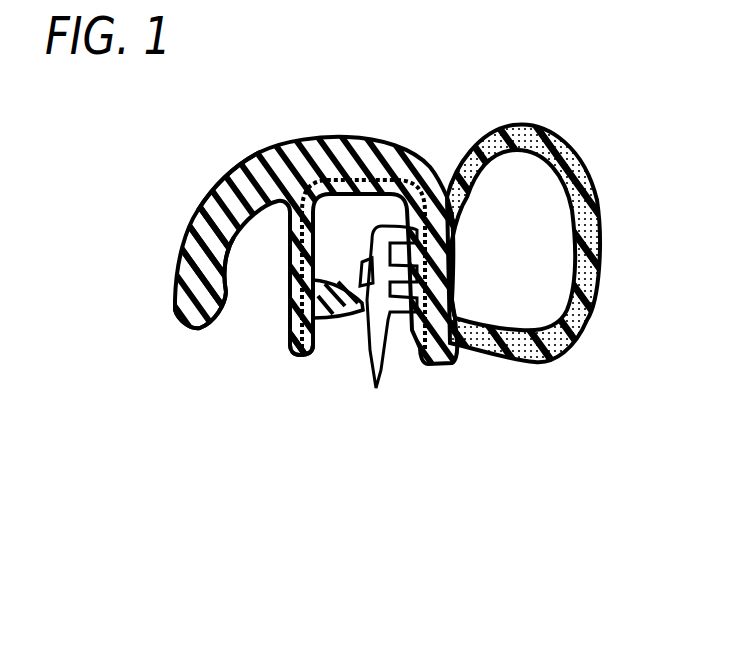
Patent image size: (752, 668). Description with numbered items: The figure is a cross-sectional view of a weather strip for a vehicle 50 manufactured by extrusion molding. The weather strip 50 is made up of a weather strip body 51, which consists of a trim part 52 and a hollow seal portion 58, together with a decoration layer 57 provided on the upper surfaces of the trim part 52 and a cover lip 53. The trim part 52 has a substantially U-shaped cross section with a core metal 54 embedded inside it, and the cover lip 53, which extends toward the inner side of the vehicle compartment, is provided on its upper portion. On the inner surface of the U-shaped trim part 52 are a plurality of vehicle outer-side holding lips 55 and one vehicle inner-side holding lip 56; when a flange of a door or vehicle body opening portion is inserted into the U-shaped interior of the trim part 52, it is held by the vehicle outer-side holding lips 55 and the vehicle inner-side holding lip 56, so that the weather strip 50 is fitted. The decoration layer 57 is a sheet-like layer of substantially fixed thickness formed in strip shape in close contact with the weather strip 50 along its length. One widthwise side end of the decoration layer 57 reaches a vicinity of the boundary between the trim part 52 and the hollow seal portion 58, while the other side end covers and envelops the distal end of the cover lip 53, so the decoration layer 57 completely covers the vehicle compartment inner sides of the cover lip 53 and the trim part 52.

The weather strip for a vehicle 50 is at (376, 334).
The weather strip body 51 is at (319, 140).
The trim part 52 is at (287, 247).
The cover lip 53 is at (207, 247).
The core metal 54 is at (290, 300).
The vehicle outer-side holding lips 55 is at (376, 388).
The vehicle inner-side holding lip 56 is at (333, 317).
The decoration layer 57 is at (178, 268).
The hollow seal portion 58 is at (600, 245).